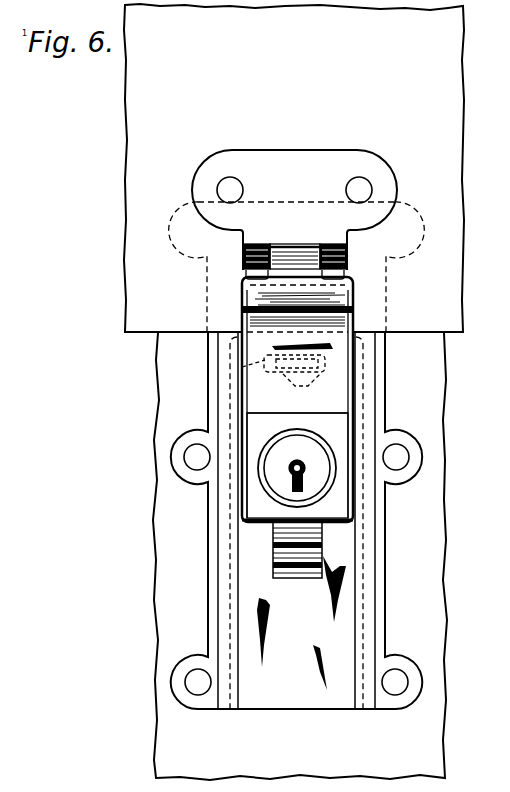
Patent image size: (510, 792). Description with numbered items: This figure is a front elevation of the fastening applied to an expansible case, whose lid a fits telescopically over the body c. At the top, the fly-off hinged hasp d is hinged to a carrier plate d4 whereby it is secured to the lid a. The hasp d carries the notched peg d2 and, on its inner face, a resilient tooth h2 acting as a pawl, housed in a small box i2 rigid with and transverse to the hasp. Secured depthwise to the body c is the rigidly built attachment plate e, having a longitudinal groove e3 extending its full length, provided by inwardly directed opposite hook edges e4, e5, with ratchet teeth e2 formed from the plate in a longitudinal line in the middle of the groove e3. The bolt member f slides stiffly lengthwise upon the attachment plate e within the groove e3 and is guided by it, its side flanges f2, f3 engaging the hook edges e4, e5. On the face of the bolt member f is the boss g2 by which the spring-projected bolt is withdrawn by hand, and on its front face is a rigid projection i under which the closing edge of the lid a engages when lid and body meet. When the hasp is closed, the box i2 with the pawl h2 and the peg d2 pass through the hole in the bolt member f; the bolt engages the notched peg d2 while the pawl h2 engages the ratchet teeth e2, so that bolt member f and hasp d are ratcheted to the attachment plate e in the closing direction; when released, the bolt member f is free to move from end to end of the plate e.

The lid a is at (399, 106).
The body c is at (433, 578).
The carrier plate d4 is at (318, 186).
The hasp d is at (323, 318).
The rigid projection i is at (243, 303).
The small box i2 is at (242, 367).
The notched peg d2 is at (294, 382).
The resilient tooth h2 is at (346, 393).
The attachment plate e is at (388, 553).
The ratchet teeth e2 is at (295, 566).
The longitudinal groove e3 is at (284, 606).
The hook edge e4 is at (235, 580).
The hook edge e5 is at (355, 628).
The bolt member f is at (250, 496).
The side flange f2 is at (242, 420).
The side flange f3 is at (352, 408).
The boss g2 is at (276, 444).